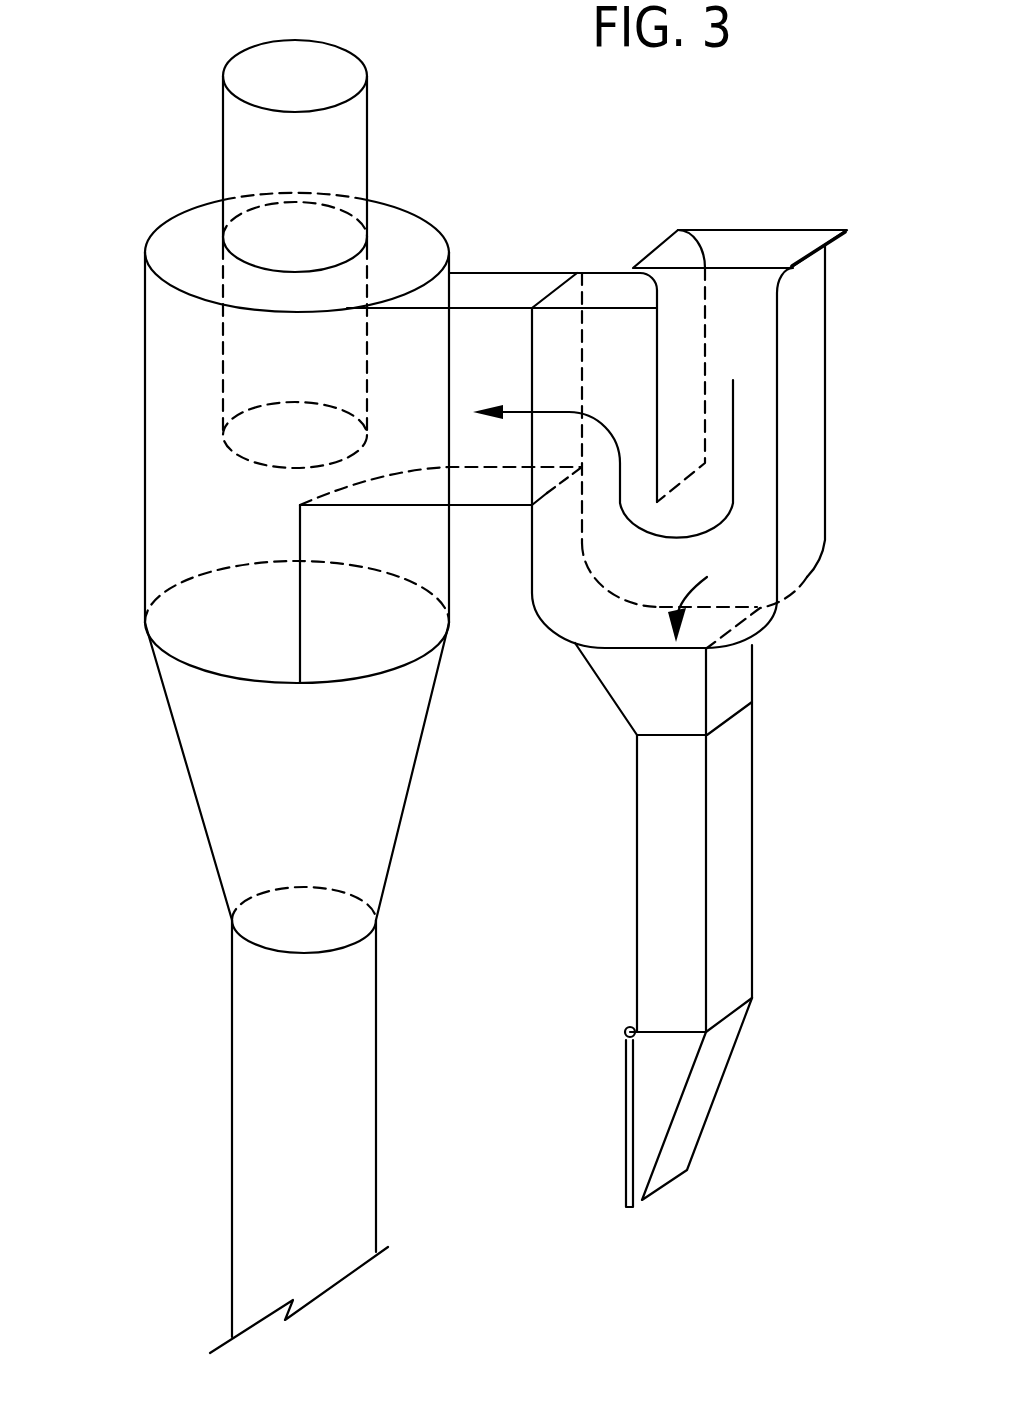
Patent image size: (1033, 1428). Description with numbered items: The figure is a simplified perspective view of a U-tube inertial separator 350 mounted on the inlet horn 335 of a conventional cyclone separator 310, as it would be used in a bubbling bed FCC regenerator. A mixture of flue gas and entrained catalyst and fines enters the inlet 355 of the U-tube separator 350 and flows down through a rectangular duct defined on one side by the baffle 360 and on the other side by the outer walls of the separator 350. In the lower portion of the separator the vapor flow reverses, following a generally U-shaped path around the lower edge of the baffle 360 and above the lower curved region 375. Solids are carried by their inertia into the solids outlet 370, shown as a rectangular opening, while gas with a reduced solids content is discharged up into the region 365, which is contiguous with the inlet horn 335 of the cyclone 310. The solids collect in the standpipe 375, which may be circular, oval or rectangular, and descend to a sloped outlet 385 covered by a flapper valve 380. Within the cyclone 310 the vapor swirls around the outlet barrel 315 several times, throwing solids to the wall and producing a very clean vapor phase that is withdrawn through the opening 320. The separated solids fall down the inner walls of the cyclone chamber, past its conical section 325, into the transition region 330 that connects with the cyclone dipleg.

The conventional cyclone separator 310 is at (145, 437).
The outlet barrel 315 is at (222, 134).
The opening 320 is at (319, 255).
The conical section 325 is at (183, 757).
The transition region 330 is at (230, 1072).
The inlet horn 335 is at (498, 272).
The U-tube separator 350 is at (828, 372).
The inlet 355 is at (762, 245).
The baffle 360 is at (677, 328).
The region 365 is at (635, 372).
The solids outlet 370 is at (644, 635).
The standpipe 375 is at (572, 572).
The flapper valve 380 is at (627, 1153).
The sloped outlet 385 is at (703, 1127).